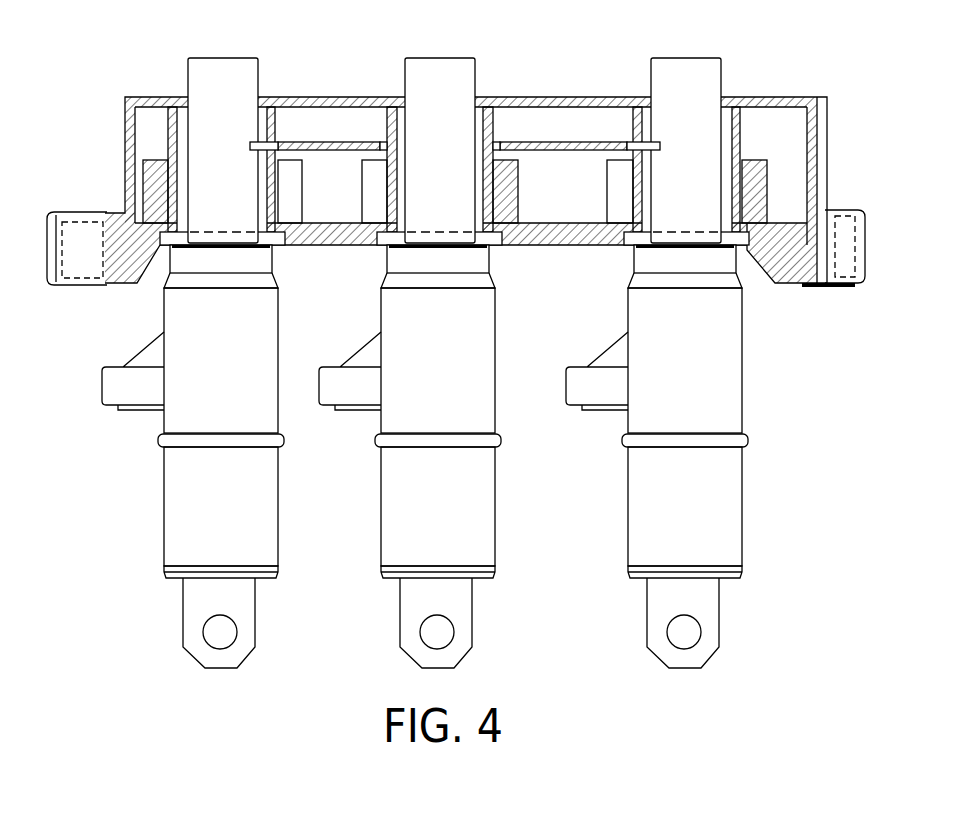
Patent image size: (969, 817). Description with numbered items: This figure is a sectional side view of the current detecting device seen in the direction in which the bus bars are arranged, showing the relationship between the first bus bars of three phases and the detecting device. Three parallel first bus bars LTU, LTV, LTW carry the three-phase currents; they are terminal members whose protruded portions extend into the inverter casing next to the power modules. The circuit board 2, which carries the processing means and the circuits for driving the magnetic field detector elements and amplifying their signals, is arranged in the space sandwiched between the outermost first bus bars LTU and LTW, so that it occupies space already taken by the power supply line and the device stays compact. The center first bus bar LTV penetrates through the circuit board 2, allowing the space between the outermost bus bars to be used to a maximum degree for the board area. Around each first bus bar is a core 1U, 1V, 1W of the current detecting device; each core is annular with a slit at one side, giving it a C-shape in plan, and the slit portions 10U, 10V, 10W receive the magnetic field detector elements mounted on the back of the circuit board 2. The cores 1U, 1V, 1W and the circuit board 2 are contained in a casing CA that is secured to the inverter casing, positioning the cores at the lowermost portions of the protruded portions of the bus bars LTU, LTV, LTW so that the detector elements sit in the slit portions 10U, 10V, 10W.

The casing CA is at (127, 128).
The core 1U is at (140, 195).
The core 1V is at (519, 207).
The core 1W is at (752, 160).
The slit portion 10U is at (295, 183).
The slit portion 10V is at (370, 207).
The slit portion 10W is at (612, 188).
The circuit board 2 is at (540, 150).
The first bus bar LTU is at (252, 85).
The first bus bar LTV is at (470, 80).
The first bus bar LTW is at (715, 75).